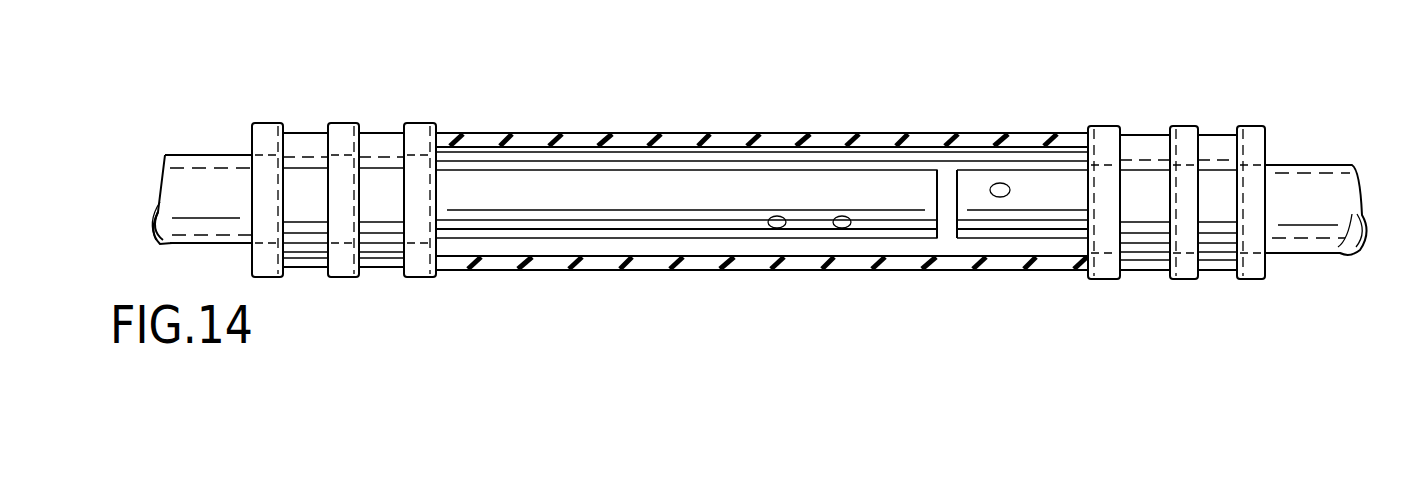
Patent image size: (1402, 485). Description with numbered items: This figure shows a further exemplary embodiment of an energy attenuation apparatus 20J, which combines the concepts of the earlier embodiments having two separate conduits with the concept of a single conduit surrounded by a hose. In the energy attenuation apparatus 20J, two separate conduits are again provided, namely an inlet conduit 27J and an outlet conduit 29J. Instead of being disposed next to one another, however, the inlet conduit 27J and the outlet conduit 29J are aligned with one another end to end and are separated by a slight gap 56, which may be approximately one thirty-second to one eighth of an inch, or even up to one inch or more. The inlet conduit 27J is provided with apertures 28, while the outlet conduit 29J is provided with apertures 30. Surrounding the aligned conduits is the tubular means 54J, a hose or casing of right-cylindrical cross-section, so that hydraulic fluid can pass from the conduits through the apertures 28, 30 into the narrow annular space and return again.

The energy attenuation apparatus 20J is at (1012, 118).
The tubular means 54J is at (856, 133).
The inlet conduit 27J is at (888, 226).
The outlet conduit 29J is at (1047, 215).
The gap 56 is at (946, 232).
The apertures 28 is at (775, 228).
The apertures 30 is at (1000, 197).